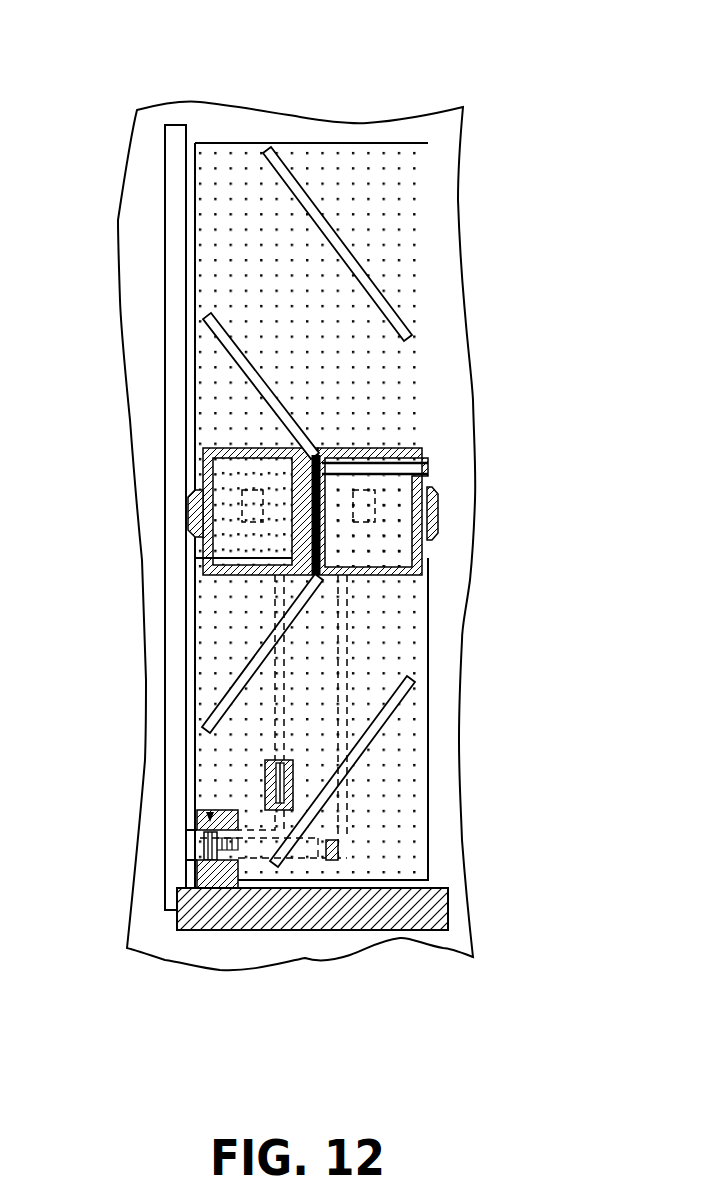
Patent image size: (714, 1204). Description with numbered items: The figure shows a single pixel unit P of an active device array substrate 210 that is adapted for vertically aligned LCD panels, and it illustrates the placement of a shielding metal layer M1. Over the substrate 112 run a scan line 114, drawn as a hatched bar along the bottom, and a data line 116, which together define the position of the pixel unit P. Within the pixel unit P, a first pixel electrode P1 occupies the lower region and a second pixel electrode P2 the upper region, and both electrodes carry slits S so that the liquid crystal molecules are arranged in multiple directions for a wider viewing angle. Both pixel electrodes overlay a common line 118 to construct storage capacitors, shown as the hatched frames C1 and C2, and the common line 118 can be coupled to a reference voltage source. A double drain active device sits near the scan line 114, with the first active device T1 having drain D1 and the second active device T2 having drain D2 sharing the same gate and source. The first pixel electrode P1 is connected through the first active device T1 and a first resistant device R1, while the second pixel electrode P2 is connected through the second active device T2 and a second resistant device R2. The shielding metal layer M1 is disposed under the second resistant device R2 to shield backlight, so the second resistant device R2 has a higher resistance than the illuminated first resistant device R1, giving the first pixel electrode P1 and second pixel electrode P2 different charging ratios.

The pixel unit P is at (328, 111).
The substrate 112 is at (458, 227).
The second pixel electrode P2 is at (222, 243).
The slit S is at (385, 300).
The common line 118 is at (437, 511).
The storage capacitor of second pixel electrode C2 is at (243, 505).
The storage capacitor of first pixel electrode C1 is at (375, 505).
The second resistant device R2 is at (265, 790).
The shielding metal layer M1 is at (280, 760).
The first pixel electrode P1 is at (428, 740).
The second active device T2 is at (208, 810).
The drain of second active device D2 is at (261, 705).
The data line 116 is at (183, 848).
The first resistant device R1 is at (337, 850).
The first active device T1 is at (178, 917).
The drain of first active device D1 is at (223, 877).
The scan line 114 is at (210, 928).
The active device array substrate 210 is at (572, 1009).